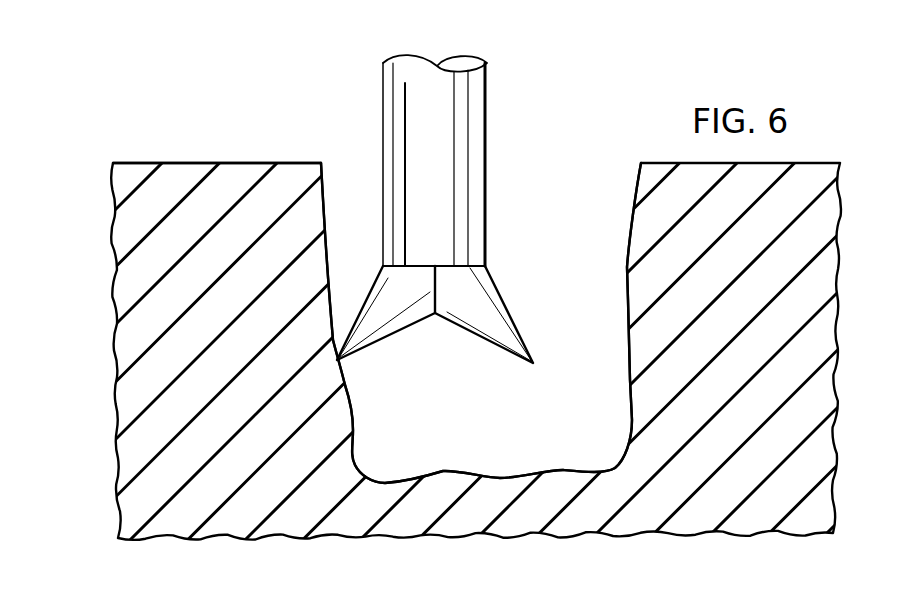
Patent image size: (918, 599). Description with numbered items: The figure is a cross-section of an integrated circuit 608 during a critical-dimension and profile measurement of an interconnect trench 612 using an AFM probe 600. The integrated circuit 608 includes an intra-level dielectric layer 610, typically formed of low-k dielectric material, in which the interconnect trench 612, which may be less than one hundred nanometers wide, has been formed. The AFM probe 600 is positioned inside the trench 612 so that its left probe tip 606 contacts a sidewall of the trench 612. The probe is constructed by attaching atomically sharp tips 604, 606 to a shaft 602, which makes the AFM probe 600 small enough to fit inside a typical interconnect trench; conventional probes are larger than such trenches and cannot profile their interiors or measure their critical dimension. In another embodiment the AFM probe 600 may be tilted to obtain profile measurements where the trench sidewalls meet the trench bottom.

The AFM probe 600 is at (423, 223).
The shaft 602 is at (487, 112).
The right probe tip 604 is at (483, 340).
The left probe tip 606 is at (388, 337).
The integrated circuit 608 is at (208, 84).
The intra-level dielectric layer 610 is at (115, 295).
The interconnect trench 612 is at (568, 215).